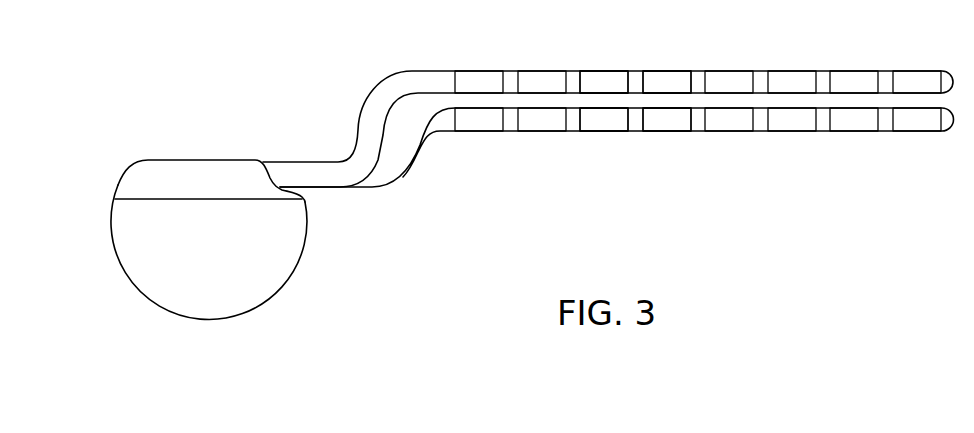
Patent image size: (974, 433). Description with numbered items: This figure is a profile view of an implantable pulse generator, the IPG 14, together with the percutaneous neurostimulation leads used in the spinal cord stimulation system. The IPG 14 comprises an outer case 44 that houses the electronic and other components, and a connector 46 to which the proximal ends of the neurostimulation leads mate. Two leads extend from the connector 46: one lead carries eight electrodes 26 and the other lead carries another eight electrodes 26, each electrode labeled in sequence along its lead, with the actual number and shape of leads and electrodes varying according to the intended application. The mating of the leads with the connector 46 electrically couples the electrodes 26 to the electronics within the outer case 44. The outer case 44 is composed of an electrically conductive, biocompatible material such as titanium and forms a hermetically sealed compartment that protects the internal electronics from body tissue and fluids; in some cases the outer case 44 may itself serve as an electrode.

The implantable pulse generator 14 is at (219, 208).
The outer case 44 is at (304, 240).
The connector 46 is at (215, 167).
The electrodes 26 is at (662, 70).